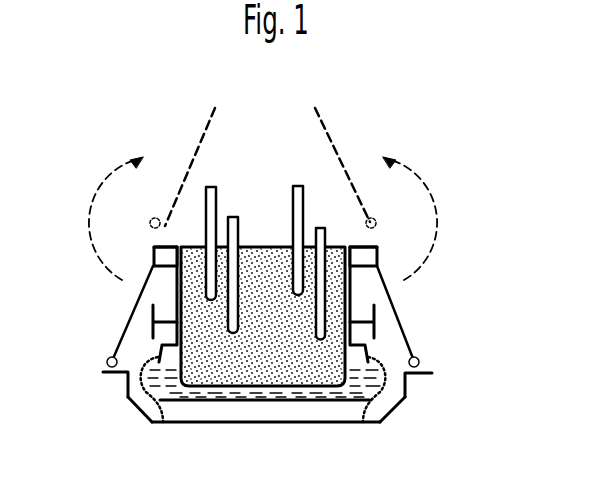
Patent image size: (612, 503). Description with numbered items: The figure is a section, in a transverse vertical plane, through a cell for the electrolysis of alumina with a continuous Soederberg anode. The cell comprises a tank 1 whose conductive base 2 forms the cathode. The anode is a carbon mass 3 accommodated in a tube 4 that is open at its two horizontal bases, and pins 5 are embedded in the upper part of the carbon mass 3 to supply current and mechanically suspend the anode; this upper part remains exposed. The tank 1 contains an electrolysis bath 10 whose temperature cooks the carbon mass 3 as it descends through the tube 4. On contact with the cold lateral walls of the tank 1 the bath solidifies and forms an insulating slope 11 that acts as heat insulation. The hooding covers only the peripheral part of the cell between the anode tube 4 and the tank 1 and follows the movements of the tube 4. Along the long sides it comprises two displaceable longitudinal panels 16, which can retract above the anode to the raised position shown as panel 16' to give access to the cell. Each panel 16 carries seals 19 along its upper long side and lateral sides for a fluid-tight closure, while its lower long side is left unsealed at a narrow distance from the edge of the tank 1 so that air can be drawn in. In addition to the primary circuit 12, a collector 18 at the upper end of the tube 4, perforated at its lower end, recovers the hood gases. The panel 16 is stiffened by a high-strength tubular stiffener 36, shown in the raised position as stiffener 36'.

The tank 1 is at (143, 415).
The base 2 is at (333, 423).
The carbon mass 3 is at (263, 270).
The tube 4 is at (177, 291).
The pins 5 is at (213, 203).
The electrolysis bath 10 is at (248, 395).
The insulating slope 11 is at (140, 392).
The primary circuit 12 is at (118, 345).
The longitudinal panel 16 is at (272, 321).
The longitudinal panel in upper position 16' is at (261, 161).
The collector 18 is at (154, 250).
The seals 19 is at (153, 265).
The tubular stiffener 36 is at (273, 386).
The tubular stiffener in upper position 36' is at (263, 218).